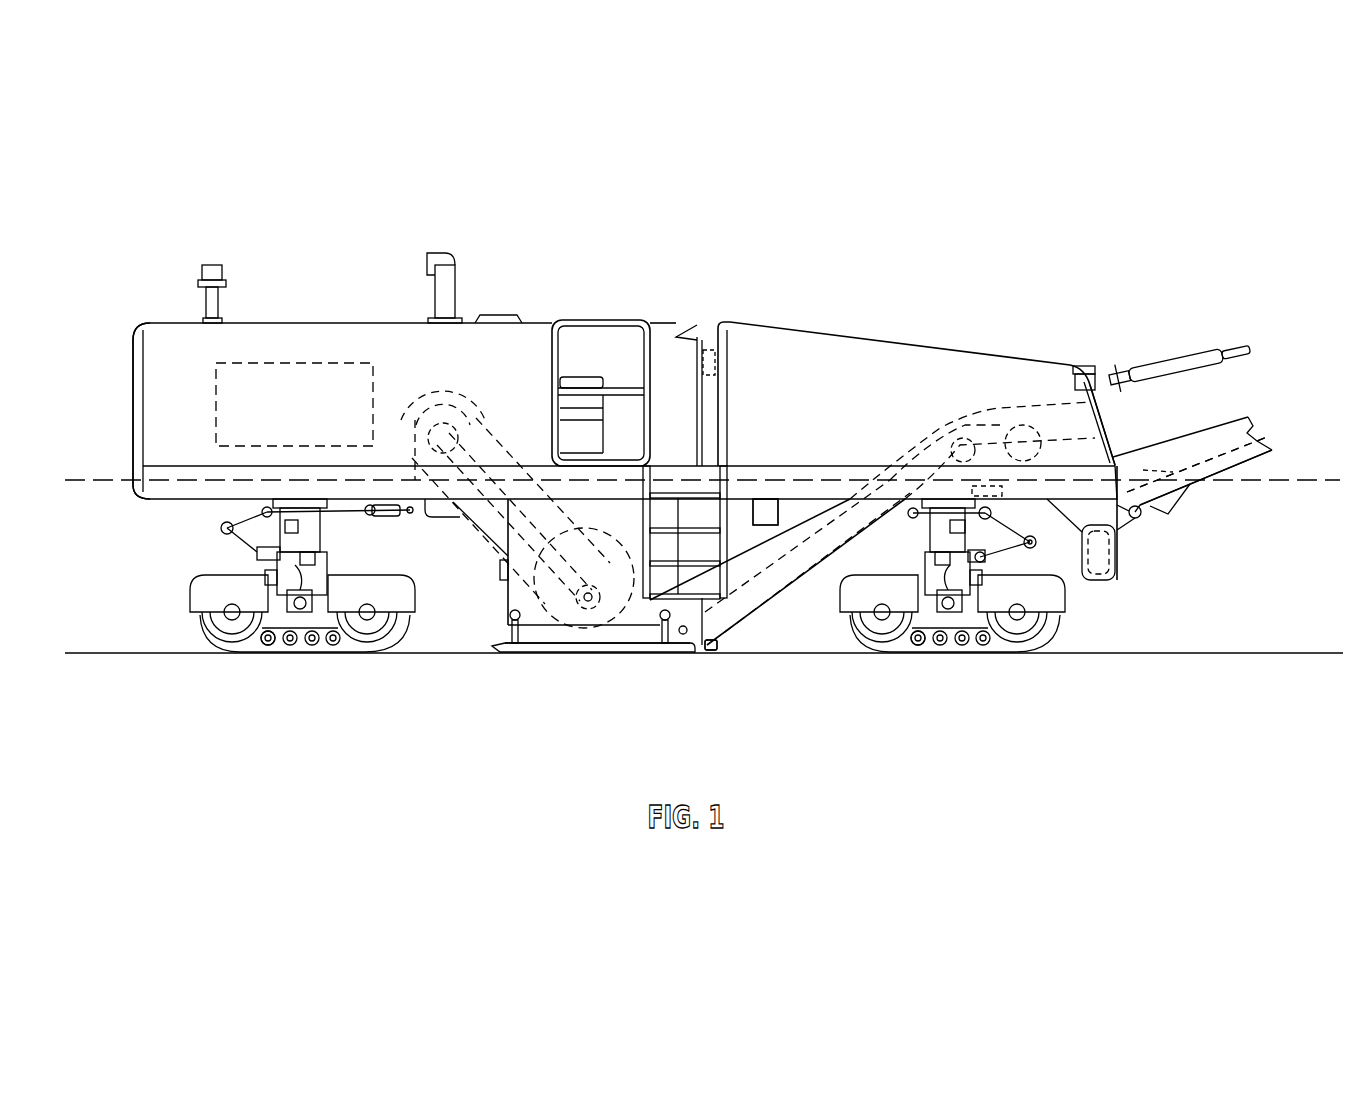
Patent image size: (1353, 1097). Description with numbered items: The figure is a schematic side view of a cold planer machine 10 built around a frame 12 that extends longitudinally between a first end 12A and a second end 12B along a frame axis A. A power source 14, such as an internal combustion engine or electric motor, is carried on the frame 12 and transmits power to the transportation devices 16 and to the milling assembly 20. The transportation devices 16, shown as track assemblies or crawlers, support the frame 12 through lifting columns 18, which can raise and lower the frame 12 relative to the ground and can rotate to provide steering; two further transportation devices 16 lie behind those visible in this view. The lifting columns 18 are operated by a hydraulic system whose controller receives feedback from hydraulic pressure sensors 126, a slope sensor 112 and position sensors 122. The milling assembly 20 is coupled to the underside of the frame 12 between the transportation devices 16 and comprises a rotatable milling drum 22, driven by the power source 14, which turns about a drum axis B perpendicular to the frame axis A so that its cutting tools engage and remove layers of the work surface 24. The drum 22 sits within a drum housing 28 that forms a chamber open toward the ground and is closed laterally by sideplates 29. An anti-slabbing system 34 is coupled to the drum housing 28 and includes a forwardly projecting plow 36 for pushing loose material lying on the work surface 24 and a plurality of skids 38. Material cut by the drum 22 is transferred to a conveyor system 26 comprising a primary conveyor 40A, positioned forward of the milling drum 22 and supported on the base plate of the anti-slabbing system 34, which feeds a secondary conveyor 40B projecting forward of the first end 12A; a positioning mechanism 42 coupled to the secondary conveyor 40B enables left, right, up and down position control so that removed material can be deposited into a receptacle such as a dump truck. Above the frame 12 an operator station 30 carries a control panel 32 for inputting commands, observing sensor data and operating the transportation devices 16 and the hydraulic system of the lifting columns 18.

The cold planer machine 10 is at (1135, 228).
The frame 12 is at (196, 500).
The first end 12A is at (1113, 456).
The second end 12B is at (138, 485).
The power source 14 is at (277, 378).
The transportation devices 16 is at (205, 632).
The lifting columns 18 is at (305, 525).
The milling assembly 20 is at (505, 617).
The milling drum 22 is at (660, 610).
The work surface 24 is at (520, 645).
The conveyor system 26 is at (1250, 410).
The drum housing 28 is at (593, 512).
The sideplates 29 is at (530, 640).
The operator station 30 is at (665, 335).
The control panel 32 is at (690, 340).
The anti-slabbing system 34 is at (730, 645).
The plow 36 is at (715, 655).
The skids 38 is at (653, 655).
The primary conveyor 40A is at (760, 600).
The secondary conveyor 40B is at (1228, 465).
The positioning mechanism 42 is at (1203, 345).
The slope sensor 112 is at (780, 510).
The position sensors 122 is at (270, 635).
The hydraulic pressure sensors 126 is at (250, 548).
The frame axis A is at (1290, 482).
The drum axis B is at (590, 600).